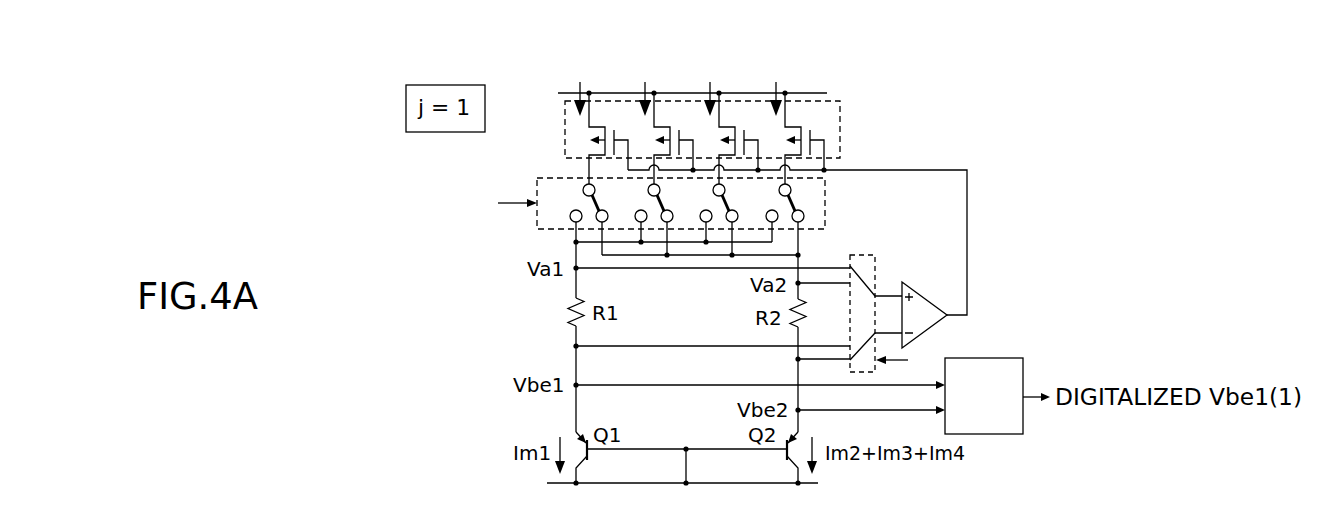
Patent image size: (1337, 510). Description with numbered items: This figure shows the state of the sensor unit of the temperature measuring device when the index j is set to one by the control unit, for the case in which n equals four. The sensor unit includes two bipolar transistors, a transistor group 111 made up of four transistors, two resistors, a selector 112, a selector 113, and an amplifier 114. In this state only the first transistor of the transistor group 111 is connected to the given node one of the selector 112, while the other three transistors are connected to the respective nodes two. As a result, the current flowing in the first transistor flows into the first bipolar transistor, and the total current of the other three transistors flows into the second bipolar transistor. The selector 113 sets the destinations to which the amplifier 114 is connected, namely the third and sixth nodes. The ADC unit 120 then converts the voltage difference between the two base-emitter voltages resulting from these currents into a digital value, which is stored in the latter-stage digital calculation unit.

The transistor group 111 is at (841, 127).
The selector 112 is at (826, 196).
The selector 113 is at (862, 254).
The amplifier 114 is at (924, 290).
The ADC unit 120 is at (1006, 358).